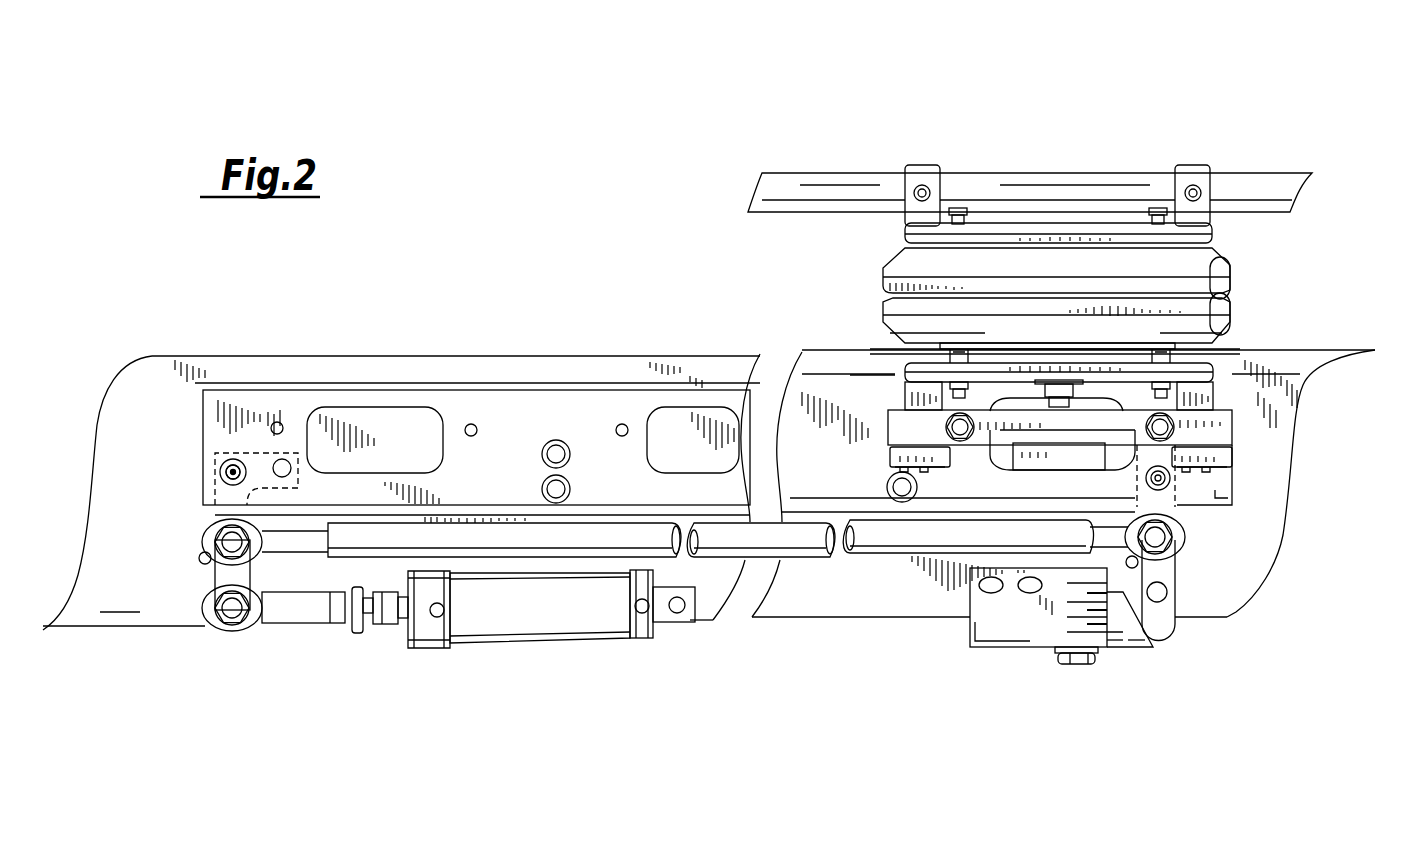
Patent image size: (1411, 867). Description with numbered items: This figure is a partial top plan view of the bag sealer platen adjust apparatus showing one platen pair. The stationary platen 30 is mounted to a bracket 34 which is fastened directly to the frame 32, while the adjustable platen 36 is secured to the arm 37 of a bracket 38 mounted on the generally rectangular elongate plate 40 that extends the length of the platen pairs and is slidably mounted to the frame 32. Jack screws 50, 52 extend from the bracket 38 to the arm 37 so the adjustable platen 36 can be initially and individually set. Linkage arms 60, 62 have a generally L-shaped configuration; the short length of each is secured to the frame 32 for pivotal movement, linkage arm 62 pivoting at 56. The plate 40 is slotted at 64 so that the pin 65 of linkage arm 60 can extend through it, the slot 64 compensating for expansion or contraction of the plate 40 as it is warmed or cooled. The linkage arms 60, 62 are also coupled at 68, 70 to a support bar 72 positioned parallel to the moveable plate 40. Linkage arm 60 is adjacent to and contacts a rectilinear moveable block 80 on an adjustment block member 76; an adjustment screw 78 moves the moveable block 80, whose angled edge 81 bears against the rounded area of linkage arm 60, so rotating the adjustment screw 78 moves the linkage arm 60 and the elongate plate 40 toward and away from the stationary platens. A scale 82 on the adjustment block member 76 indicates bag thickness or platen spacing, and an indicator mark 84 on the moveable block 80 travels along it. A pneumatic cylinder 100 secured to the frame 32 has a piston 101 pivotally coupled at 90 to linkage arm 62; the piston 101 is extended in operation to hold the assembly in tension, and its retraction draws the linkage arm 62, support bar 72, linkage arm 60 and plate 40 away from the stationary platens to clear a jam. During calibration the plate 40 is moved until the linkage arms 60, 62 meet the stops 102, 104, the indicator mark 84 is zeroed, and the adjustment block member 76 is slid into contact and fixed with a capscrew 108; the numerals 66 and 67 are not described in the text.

The stationary platen 30 is at (1222, 262).
The frame 32 is at (1045, 185).
The bracket 34 is at (918, 215).
The adjustable platen 36 is at (1225, 337).
The arm 37 is at (1213, 392).
The bracket 38 is at (1236, 435).
The elongate plate 40 is at (490, 402).
The jack screw 50 is at (890, 472).
The jack screw 52 is at (1236, 456).
The pivot 56 is at (280, 479).
The linkage arm 60 is at (1163, 568).
The linkage arm 62 is at (215, 578).
The slot 64 is at (1208, 470).
The pin 65 is at (1172, 482).
The bolt 66 is at (222, 471).
The bolt hole 67 is at (233, 465).
The coupling 68 is at (1162, 542).
The coupling 70 is at (223, 530).
The support bar 72 is at (801, 540).
The adjustment block member 76 is at (975, 605).
The adjustment screw 78 is at (1078, 668).
The moveable block 80 is at (1147, 647).
The angled edge 81 is at (1150, 638).
The scale 82 is at (1055, 628).
The indicator mark 84 is at (1118, 638).
The pivotal coupling 90 is at (232, 620).
The pneumatic cylinder 100 is at (480, 620).
The piston 101 is at (312, 612).
The stop 102 is at (1162, 586).
The stop 104 is at (200, 556).
The capscrew 108 is at (862, 295).